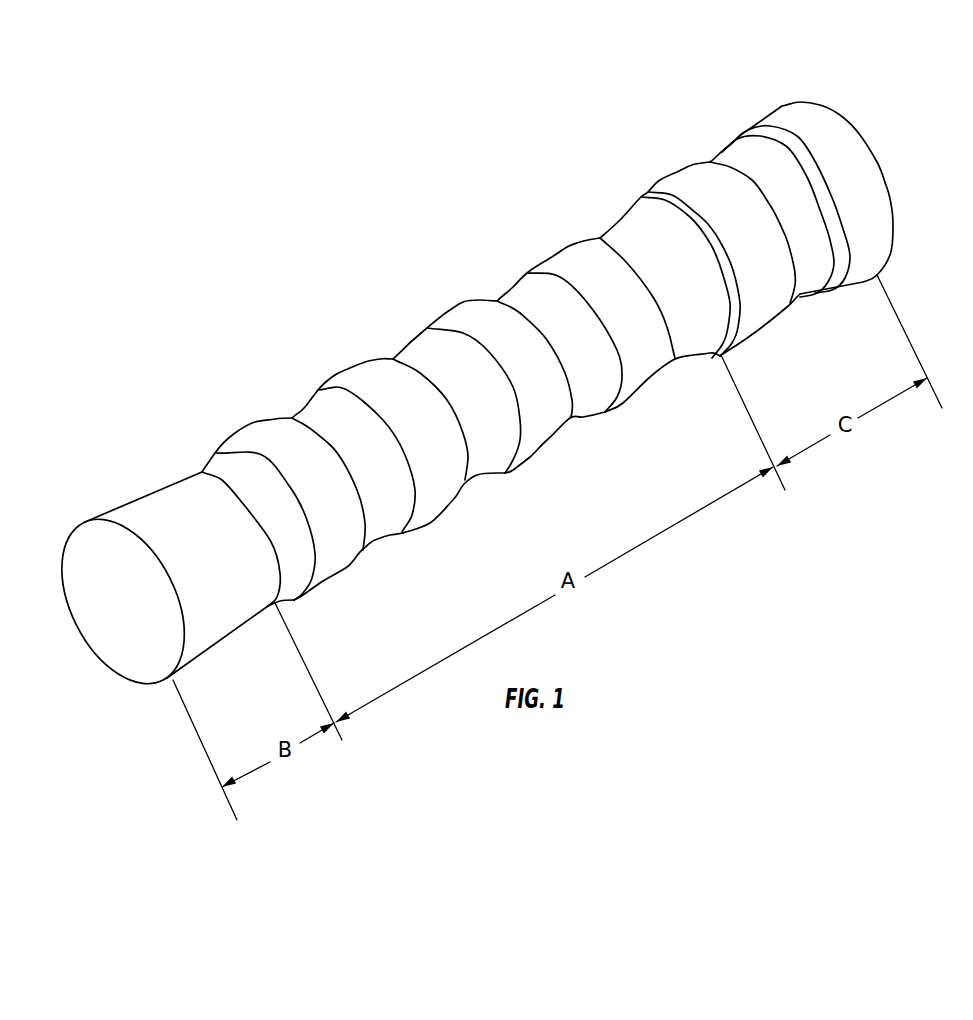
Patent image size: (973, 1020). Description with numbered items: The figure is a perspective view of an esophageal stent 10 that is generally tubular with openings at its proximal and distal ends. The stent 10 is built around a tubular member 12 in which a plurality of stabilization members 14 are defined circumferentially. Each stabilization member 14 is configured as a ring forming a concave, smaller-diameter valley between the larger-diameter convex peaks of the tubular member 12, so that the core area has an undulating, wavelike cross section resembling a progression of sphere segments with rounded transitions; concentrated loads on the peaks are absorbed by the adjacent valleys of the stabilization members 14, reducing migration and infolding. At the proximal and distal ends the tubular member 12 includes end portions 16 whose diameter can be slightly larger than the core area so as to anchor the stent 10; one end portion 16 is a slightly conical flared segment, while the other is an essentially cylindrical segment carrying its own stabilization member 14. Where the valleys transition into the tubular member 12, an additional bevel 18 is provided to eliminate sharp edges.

The esophageal stent 10 is at (295, 328).
The tubular member 12 is at (453, 310).
The stabilization member 14 is at (685, 350).
The end portion 16 is at (205, 627).
The bevel 18 is at (646, 190).